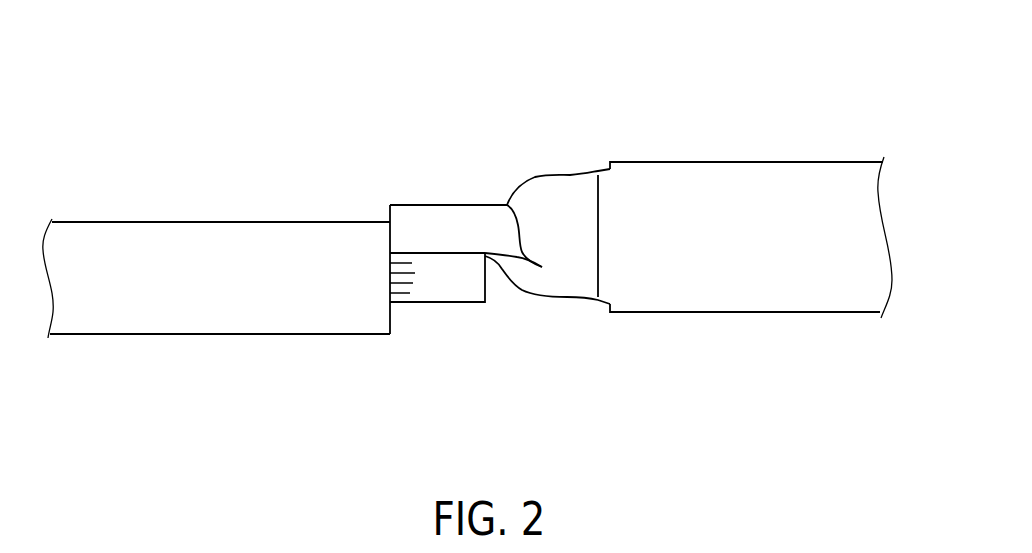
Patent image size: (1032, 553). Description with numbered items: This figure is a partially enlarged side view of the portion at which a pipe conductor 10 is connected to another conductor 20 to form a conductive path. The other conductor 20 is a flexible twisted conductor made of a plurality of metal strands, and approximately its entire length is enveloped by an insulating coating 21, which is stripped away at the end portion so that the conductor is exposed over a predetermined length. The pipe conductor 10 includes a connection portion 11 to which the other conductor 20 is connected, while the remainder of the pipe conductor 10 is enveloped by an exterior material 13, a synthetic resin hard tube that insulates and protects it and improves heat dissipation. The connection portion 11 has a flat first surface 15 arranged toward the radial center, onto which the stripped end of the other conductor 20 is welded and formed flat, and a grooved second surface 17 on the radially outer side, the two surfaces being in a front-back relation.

The pipe conductor 10 is at (751, 161).
The connection portion 11 is at (430, 217).
The exterior material 13 is at (817, 197).
The first surface 15 is at (438, 257).
The second surface 17 is at (460, 205).
The other conductor 20 is at (216, 268).
The insulating coating 21 is at (222, 303).